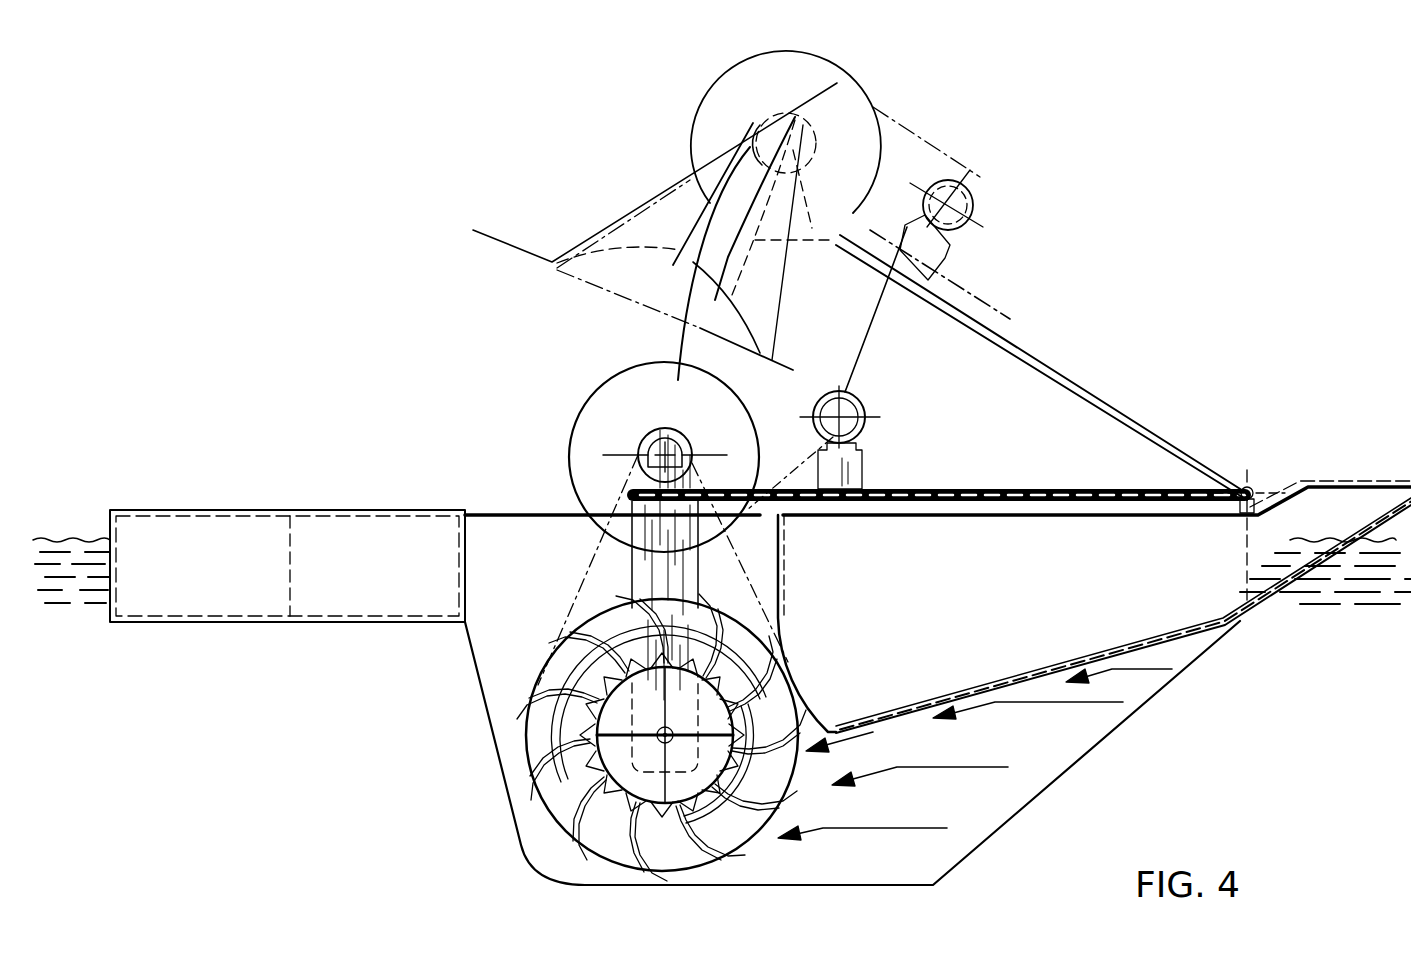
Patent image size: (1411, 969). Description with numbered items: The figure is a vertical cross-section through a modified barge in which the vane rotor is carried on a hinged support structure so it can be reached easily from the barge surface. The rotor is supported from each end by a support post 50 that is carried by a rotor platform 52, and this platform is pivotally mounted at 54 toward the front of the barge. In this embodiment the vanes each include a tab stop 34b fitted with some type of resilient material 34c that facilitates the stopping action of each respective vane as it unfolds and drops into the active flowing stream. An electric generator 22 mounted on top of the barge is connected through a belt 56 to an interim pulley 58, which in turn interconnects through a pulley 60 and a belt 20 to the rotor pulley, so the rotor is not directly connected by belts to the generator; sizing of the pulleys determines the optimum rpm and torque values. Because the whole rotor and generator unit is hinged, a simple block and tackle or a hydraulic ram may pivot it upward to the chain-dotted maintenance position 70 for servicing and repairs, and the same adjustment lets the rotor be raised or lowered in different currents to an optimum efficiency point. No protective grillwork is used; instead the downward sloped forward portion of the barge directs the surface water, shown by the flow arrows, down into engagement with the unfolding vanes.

The belt 20 is at (568, 600).
The electric generator 22 is at (866, 418).
The tab stop 34b is at (690, 811).
The resilient material 34c is at (649, 851).
The support post 50 is at (693, 590).
The rotor platform 52 is at (1034, 489).
The pivot mounting 54 is at (1282, 460).
The belt 56 is at (797, 383).
The interim pulley 58 is at (620, 400).
The pulley 60 is at (640, 450).
The maintenance position 70 is at (1073, 367).